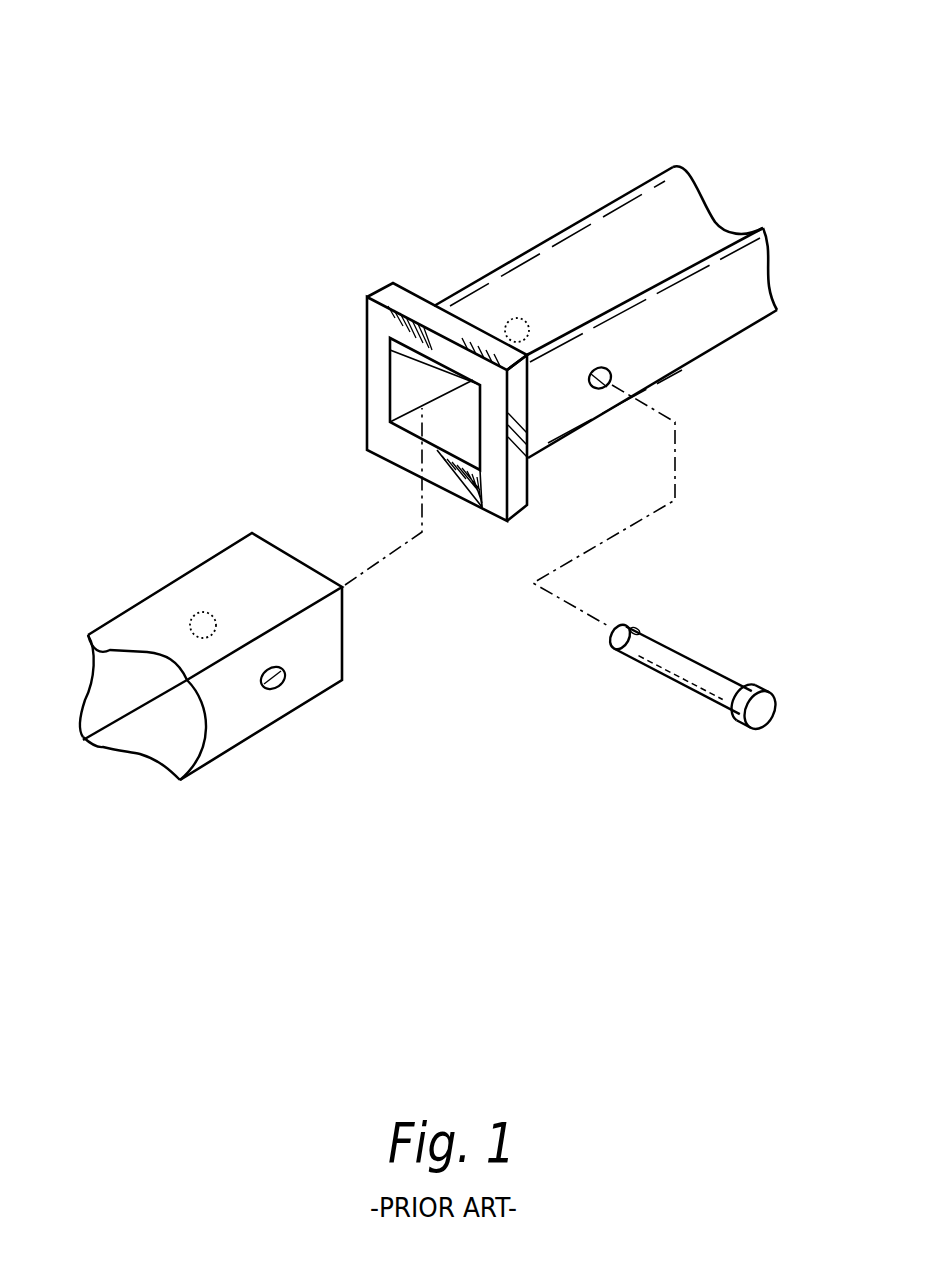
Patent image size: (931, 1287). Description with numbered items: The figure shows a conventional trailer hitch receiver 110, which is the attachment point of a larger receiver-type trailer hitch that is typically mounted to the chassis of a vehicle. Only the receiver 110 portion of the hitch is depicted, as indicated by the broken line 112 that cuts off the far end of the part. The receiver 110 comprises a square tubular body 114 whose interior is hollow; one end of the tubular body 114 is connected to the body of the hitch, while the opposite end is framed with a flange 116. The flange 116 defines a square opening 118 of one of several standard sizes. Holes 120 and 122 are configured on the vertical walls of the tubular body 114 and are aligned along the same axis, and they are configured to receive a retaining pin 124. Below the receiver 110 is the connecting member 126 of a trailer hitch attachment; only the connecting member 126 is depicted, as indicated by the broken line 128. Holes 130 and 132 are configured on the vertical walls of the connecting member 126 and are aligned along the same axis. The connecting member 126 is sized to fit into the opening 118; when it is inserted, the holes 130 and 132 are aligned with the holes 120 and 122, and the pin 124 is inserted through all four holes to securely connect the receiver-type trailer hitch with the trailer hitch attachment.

The receiver 110 is at (143, 40).
The broken line 112 is at (687, 203).
The tubular body 114 is at (722, 329).
The flange 116 is at (418, 299).
The opening 118 is at (410, 378).
The hole 120 is at (600, 367).
The hole 122 is at (513, 320).
The retaining pin 124 is at (703, 682).
The connecting member 126 is at (227, 715).
The broken line 128 is at (150, 732).
The hole 130 is at (283, 667).
The hole 132 is at (214, 614).